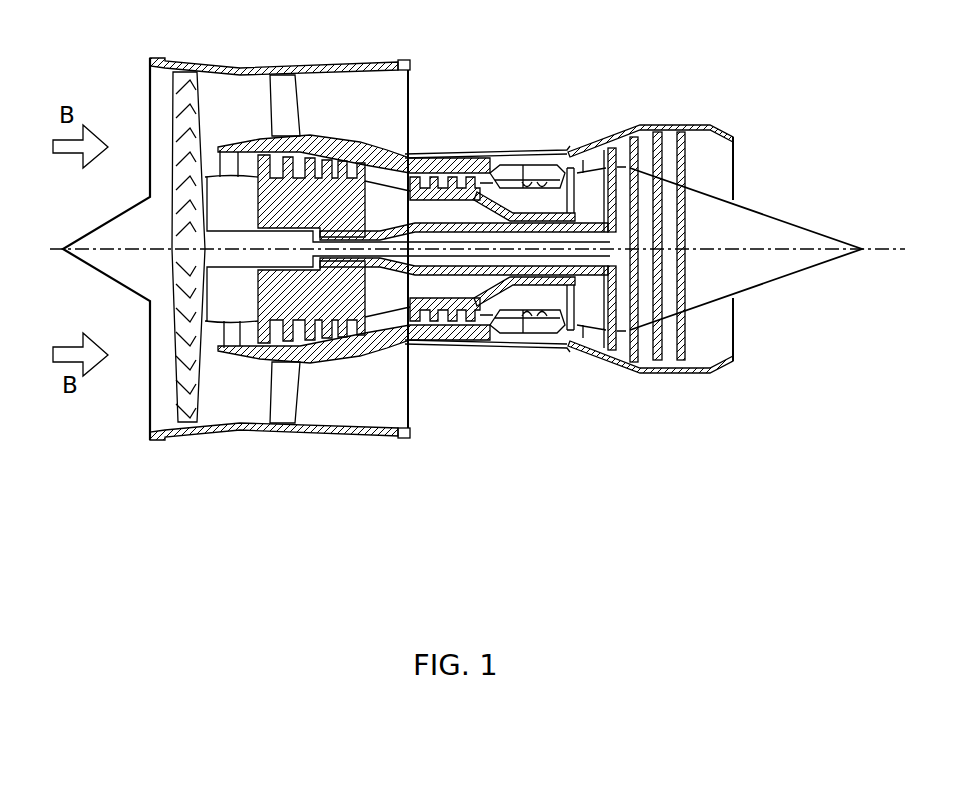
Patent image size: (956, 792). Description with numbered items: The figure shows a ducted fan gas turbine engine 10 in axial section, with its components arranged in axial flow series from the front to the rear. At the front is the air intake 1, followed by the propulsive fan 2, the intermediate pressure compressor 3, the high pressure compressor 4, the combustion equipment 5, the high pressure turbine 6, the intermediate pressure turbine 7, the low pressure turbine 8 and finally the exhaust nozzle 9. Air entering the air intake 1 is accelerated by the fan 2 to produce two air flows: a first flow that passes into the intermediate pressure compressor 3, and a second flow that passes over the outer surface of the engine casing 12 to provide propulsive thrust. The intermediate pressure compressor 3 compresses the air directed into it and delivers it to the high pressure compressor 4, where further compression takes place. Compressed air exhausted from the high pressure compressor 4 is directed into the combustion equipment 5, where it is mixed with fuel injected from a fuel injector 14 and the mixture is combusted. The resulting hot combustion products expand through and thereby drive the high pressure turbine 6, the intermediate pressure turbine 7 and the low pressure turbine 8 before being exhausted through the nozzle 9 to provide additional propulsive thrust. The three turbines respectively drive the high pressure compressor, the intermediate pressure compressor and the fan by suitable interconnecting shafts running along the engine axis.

The air intake 1 is at (162, 440).
The propulsive fan 2 is at (207, 65).
The intermediate pressure compressor 3 is at (288, 325).
The high pressure compressor 4 is at (452, 320).
The combustion equipment 5 is at (534, 174).
The high pressure turbine 6 is at (570, 152).
The intermediate pressure turbine 7 is at (610, 140).
The low pressure turbine 8 is at (628, 372).
The exhaust nozzle 9 is at (747, 245).
The ducted fan gas turbine engine 10 is at (344, 508).
The engine casing 12 is at (388, 150).
The fuel injector 14 is at (488, 158).